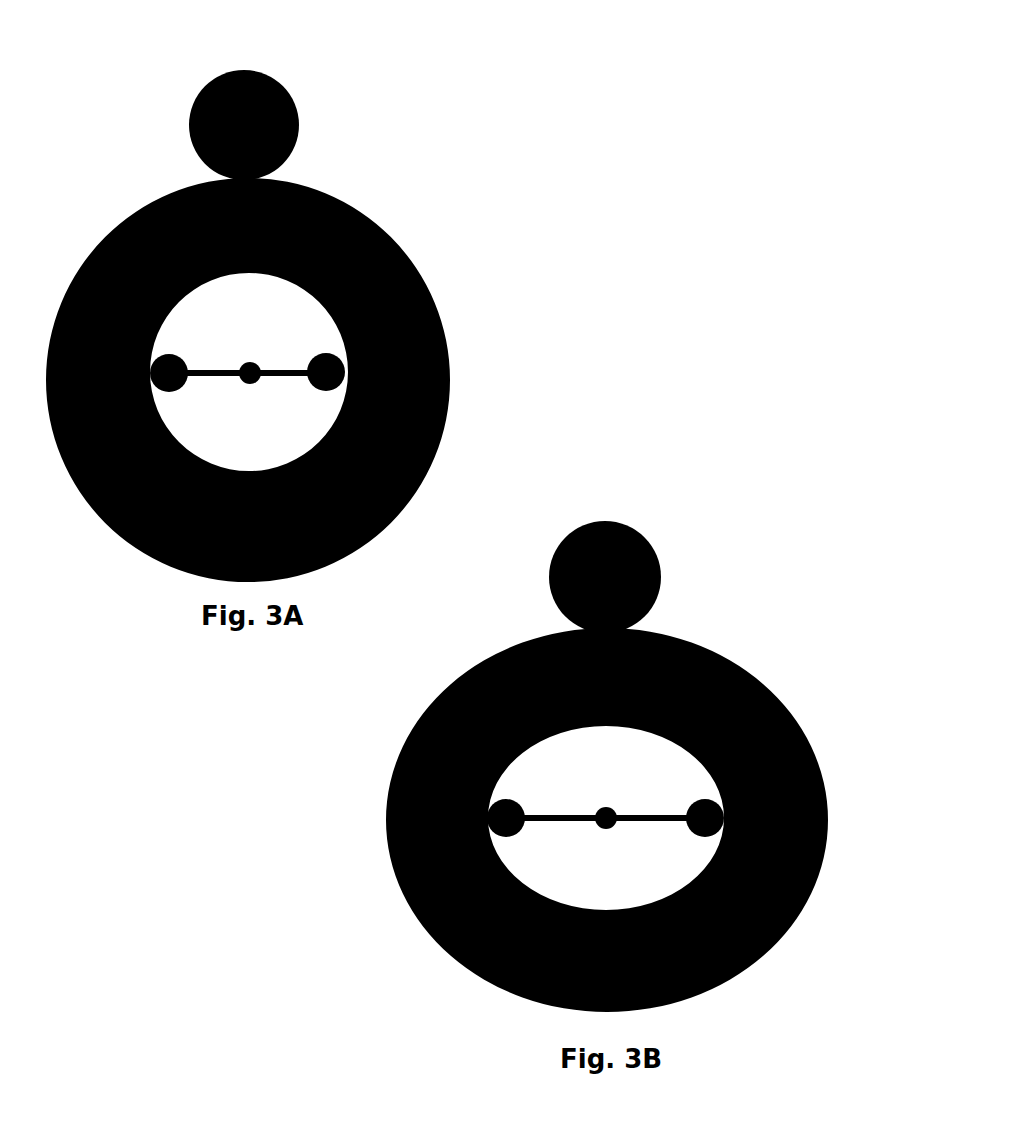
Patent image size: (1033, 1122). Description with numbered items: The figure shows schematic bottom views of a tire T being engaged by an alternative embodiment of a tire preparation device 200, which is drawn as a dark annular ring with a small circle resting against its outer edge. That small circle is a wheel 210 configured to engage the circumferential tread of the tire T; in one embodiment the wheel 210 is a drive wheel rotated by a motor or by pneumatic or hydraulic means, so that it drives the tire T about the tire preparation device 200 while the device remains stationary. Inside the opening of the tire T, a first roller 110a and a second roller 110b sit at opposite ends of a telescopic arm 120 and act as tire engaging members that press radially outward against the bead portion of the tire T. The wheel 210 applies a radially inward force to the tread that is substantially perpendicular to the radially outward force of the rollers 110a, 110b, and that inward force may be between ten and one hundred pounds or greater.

In FIG. 3A, the tire preparation device 200 is at (264, 310).
In FIG. 3B, the tire preparation device 200 is at (528, 736).
In FIG. 3A, the wheel 210 is at (188, 113).
In FIG. 3B, the wheel 210 is at (638, 532).
In FIG. 3A, the tire T is at (393, 227).
In FIG. 3B, the tire T is at (738, 656).
In FIG. 3A, the first roller 110a is at (173, 356).
In FIG. 3B, the first roller 110a is at (513, 807).
In FIG. 3A, the second roller 110b is at (305, 378).
In FIG. 3B, the second roller 110b is at (704, 831).
In FIG. 3B, the telescopic arm 120 is at (580, 807).